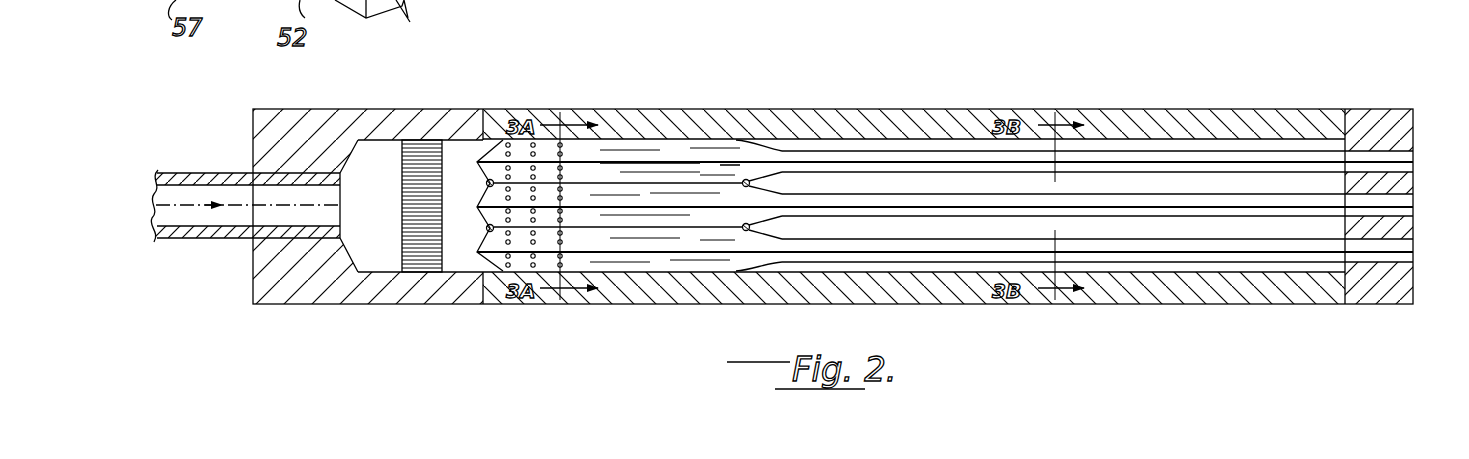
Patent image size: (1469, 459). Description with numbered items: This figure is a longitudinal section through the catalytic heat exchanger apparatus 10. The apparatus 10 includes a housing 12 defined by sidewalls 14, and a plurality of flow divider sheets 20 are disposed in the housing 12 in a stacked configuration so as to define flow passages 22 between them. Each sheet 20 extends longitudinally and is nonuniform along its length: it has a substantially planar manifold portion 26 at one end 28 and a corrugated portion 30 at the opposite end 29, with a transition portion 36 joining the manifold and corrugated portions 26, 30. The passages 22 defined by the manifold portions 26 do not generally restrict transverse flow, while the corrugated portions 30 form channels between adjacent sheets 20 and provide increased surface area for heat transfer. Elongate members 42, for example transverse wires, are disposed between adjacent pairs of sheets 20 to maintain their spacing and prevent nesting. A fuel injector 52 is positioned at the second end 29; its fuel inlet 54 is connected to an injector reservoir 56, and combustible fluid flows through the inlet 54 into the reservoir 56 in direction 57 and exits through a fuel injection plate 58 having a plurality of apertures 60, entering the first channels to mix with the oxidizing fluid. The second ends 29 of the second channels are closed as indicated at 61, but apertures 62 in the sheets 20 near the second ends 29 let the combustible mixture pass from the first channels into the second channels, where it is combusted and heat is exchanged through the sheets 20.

The apparatus 10 is at (998, 86).
The housing 12 is at (573, 104).
The sidewalls 14 is at (880, 108).
The flow divider sheets 20 is at (658, 172).
The flow passages 22 is at (1122, 182).
The manifold portion 26 is at (1236, 148).
The end 28 is at (1338, 225).
The opposite end 29 is at (460, 180).
The corrugated portion 30 is at (696, 131).
The transition portion 36 is at (772, 144).
The elongate members 42 is at (500, 132).
The fuel injector 52 is at (310, 306).
The fuel inlet 54 is at (220, 173).
The injector reservoir 56 is at (375, 142).
The direction 57 is at (198, 216).
The fuel injection plate 58 is at (420, 274).
The apertures 60 is at (408, 198).
The closed second ends 61 is at (490, 182).
The apertures 62 is at (570, 152).